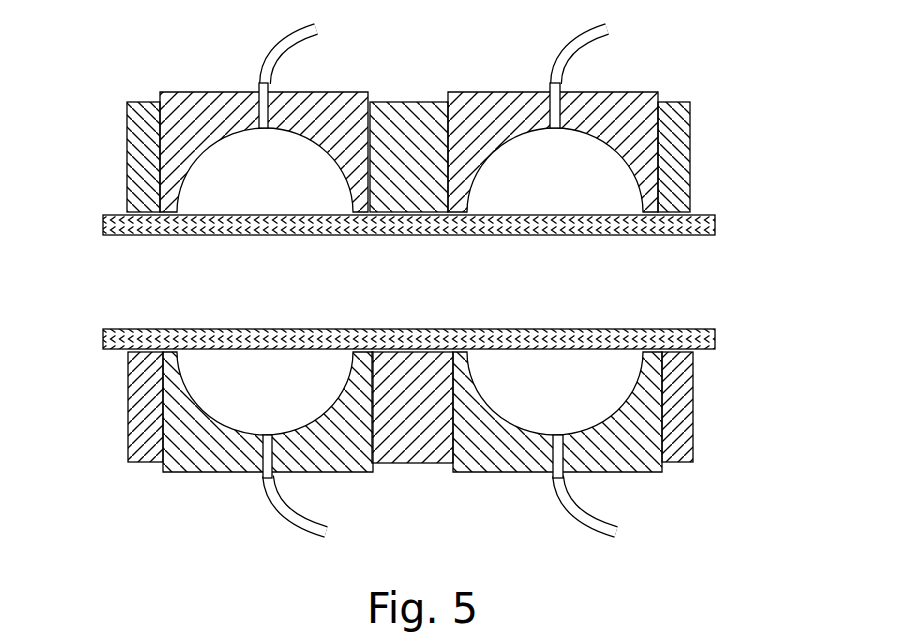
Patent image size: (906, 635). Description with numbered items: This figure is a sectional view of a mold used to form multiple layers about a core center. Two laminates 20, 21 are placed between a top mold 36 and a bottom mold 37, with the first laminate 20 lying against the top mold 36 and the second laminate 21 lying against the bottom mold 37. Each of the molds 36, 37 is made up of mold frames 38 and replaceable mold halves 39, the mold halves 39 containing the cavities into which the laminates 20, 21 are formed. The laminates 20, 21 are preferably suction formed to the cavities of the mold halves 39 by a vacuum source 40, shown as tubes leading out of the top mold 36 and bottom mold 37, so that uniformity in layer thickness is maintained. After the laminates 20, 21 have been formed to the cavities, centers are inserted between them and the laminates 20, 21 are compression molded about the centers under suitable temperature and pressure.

The laminate 20 is at (103, 226).
The laminate 21 is at (103, 331).
The top mold 36 is at (127, 127).
The bottom mold 37 is at (128, 407).
The mold frame 38 is at (141, 462).
The replaceable mold half 39 is at (213, 452).
The vacuum source 40 is at (268, 56).